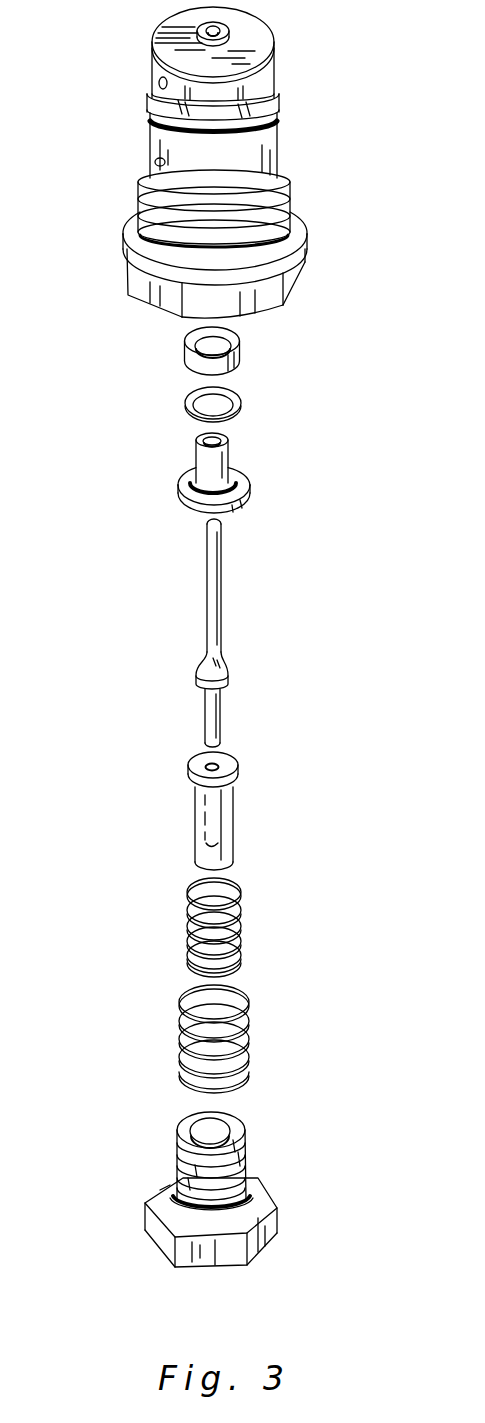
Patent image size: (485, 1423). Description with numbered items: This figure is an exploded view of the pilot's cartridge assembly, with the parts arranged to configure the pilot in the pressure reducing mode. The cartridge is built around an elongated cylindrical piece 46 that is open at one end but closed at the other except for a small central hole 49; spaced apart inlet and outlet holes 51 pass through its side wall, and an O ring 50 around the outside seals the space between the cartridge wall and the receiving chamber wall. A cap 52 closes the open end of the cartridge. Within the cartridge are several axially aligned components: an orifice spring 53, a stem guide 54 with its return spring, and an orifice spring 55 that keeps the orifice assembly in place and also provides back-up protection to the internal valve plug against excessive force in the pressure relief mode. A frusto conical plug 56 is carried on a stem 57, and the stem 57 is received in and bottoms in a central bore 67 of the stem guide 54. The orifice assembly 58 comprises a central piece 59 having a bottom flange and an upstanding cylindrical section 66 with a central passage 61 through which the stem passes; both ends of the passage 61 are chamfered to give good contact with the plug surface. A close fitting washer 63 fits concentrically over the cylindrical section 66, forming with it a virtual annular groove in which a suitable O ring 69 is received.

The elongated cylindrical piece 46 is at (268, 145).
The small central hole 49 is at (228, 27).
The O ring 50 is at (282, 100).
The inlet and outlet holes 51 is at (159, 84).
The cap 52 is at (268, 1222).
The orifice spring 53 is at (250, 1053).
The stem guide 54 is at (266, 795).
The orifice spring 55 is at (243, 942).
The frusto conical plug 56 is at (229, 680).
The stem 57 is at (222, 610).
The orifice assembly 58 is at (183, 419).
The central piece 59 is at (146, 459).
The central passage 61 is at (198, 444).
The washer 63 is at (186, 357).
The upstanding cylindrical section 66 is at (180, 478).
The central bore 67 is at (236, 757).
The O ring 69 is at (186, 405).